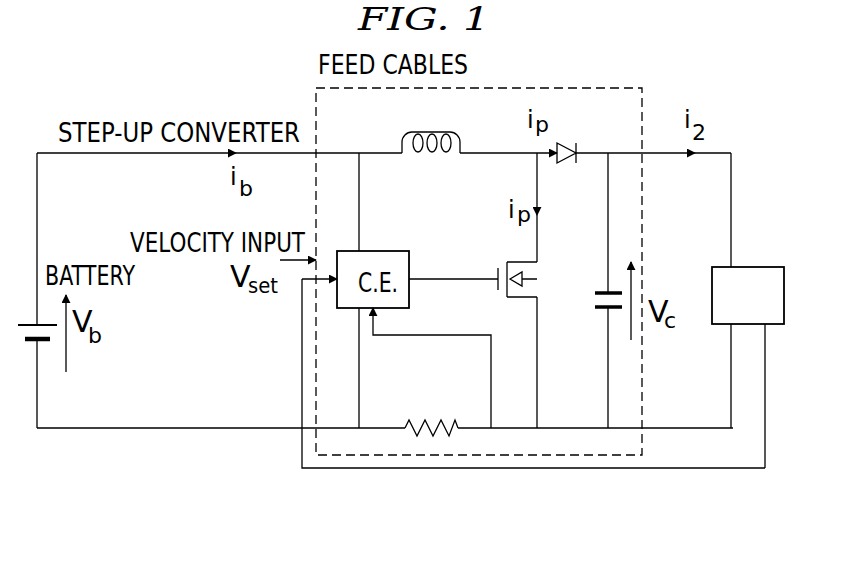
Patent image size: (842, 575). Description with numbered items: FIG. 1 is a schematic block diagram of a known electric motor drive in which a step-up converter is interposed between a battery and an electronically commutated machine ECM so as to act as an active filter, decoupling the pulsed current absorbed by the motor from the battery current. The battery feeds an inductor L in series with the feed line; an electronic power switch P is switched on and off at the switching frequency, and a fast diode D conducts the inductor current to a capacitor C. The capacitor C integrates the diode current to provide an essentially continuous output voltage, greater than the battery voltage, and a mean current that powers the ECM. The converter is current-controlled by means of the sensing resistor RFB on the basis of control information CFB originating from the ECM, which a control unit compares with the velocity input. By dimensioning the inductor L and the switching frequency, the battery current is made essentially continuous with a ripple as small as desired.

The inductor L is at (431, 126).
The diode D is at (569, 132).
The electronic power switch P is at (487, 280).
The capacitor C is at (601, 290).
The electronically commutated machine ECM is at (748, 310).
The current feedback resistor RFB is at (431, 410).
The control feedback information CFB is at (533, 395).